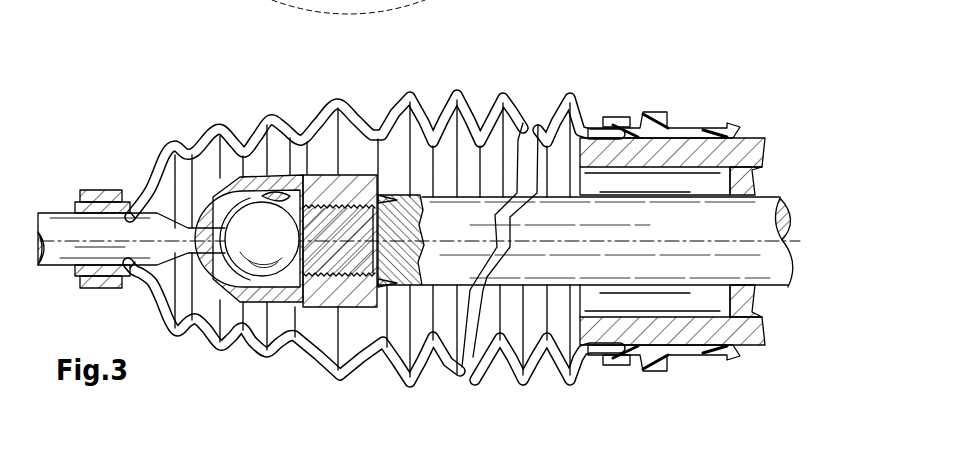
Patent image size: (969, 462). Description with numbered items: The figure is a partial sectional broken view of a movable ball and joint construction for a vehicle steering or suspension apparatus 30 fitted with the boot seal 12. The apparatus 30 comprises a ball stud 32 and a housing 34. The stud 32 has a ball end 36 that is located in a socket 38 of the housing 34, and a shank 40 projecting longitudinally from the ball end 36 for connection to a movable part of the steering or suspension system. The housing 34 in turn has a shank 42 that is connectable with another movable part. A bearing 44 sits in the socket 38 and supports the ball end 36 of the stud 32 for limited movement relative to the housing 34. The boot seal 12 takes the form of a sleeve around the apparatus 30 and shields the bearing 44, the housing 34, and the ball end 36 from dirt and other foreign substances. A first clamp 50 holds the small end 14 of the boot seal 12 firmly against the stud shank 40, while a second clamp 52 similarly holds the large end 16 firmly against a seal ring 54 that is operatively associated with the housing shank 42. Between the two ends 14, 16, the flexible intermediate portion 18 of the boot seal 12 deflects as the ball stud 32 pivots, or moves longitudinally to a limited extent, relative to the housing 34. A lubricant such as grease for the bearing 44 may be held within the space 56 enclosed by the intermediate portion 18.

The boot seal 12 is at (460, 92).
The small end 14 is at (98, 286).
The large end 16 is at (734, 127).
The flexible intermediate portion 18 is at (362, 360).
The vehicle steering or suspension apparatus 30 is at (607, 55).
The ball stud 32 is at (145, 256).
The housing 34 is at (345, 187).
The ball end 36 is at (250, 225).
The socket 38 is at (283, 200).
The shank 40 is at (138, 225).
The shank 42 is at (660, 220).
The bearing 44 is at (267, 292).
The first clamp 50 is at (97, 198).
The second clamp 52 is at (617, 117).
The seal ring 54 is at (752, 170).
The space 56 is at (325, 332).